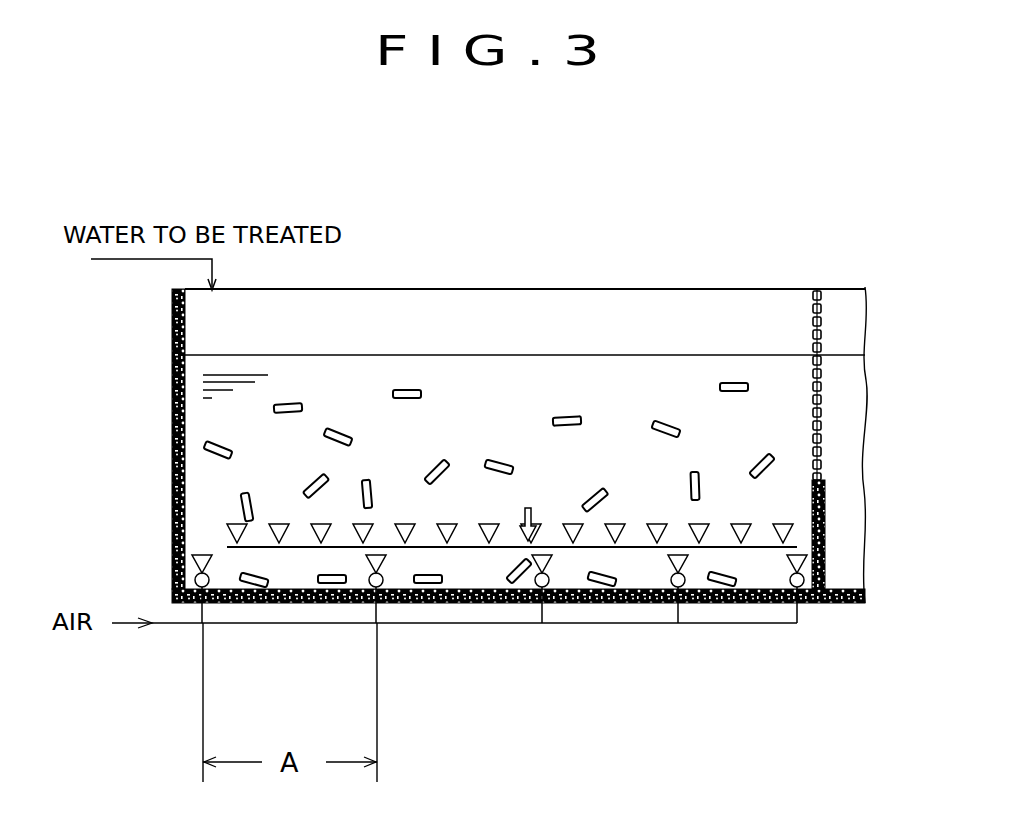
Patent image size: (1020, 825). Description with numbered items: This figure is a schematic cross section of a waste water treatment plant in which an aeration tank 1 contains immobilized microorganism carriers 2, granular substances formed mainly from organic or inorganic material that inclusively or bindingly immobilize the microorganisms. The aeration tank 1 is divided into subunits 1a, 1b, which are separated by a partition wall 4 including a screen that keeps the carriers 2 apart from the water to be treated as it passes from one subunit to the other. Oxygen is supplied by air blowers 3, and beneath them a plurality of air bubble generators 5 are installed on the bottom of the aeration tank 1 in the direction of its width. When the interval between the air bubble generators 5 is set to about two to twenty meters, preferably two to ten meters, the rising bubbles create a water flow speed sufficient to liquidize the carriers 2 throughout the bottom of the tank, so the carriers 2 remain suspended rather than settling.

The aeration tank 1 is at (168, 382).
The subunit 1a is at (172, 436).
The subunit 1b is at (845, 604).
The immobilized microorganism carriers 2 is at (413, 390).
The air blowers 3 is at (232, 527).
The partition wall 4 is at (819, 394).
The air bubble generators 5 is at (192, 568).